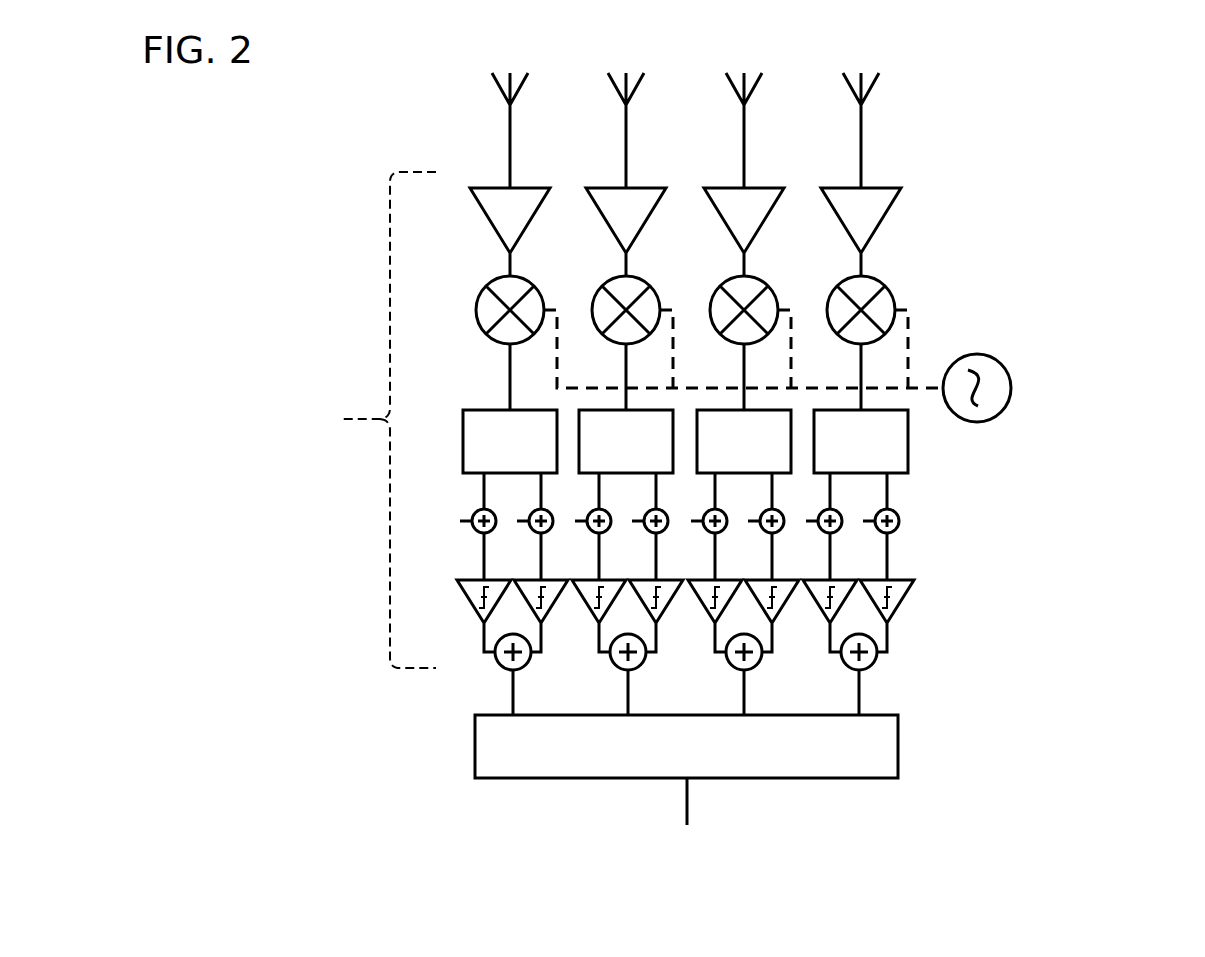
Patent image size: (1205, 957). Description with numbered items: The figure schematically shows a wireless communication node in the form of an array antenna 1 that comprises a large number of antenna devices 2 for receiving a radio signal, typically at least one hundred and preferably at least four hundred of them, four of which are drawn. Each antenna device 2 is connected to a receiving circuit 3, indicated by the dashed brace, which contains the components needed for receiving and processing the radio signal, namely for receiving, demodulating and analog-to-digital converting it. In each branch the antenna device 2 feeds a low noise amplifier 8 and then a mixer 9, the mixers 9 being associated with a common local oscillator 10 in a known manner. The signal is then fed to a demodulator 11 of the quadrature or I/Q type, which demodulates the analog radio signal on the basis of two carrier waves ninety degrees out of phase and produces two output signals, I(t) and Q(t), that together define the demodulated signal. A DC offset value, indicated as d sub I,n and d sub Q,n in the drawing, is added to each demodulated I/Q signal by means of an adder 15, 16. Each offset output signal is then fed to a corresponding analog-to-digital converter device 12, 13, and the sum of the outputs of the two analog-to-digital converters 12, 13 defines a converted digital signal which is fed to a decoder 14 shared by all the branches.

The array antenna 1 is at (948, 66).
The antenna device 2 is at (862, 120).
The receiving circuit 3 is at (332, 408).
The low noise amplifier 8 is at (886, 202).
The mixer 9 is at (891, 295).
The local oscillator 10 is at (1004, 403).
The demodulator 11 is at (895, 437).
The analog-to-digital converter device 12 is at (902, 603).
The analog-to-digital converter device 13 is at (840, 602).
The decoder 14 is at (898, 765).
The adder 15 is at (899, 528).
The adder 16 is at (842, 530).